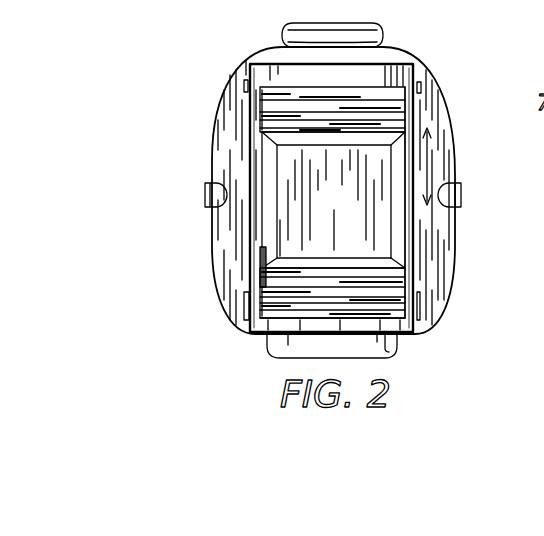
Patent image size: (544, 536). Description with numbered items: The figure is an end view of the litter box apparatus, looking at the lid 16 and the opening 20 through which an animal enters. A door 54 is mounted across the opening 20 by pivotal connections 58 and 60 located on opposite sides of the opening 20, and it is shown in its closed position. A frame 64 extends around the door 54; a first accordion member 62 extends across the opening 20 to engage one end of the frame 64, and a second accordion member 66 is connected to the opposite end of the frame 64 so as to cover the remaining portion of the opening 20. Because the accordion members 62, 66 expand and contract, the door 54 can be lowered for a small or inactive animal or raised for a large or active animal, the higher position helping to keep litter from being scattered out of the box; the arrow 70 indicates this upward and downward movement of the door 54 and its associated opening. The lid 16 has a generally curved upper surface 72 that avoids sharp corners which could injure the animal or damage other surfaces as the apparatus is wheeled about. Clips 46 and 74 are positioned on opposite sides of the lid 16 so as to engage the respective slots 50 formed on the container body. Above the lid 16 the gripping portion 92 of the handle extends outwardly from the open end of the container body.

The lid 16 is at (220, 147).
The opening 20 is at (404, 220).
The clip 46 is at (462, 193).
The slot 50 is at (253, 118).
The door 54 is at (349, 213).
The pivotal connection 58 is at (404, 272).
The pivotal connection 60 is at (264, 270).
The first accordion member 62 is at (401, 92).
The frame 64 is at (402, 128).
The second accordion member 66 is at (398, 303).
The arrow 70 is at (428, 168).
The curved upper surface 72 is at (250, 72).
The clip 74 is at (203, 183).
The gripping portion 92 is at (295, 25).